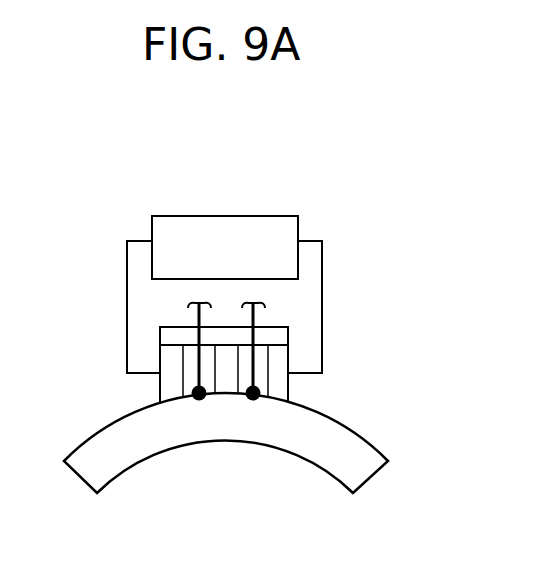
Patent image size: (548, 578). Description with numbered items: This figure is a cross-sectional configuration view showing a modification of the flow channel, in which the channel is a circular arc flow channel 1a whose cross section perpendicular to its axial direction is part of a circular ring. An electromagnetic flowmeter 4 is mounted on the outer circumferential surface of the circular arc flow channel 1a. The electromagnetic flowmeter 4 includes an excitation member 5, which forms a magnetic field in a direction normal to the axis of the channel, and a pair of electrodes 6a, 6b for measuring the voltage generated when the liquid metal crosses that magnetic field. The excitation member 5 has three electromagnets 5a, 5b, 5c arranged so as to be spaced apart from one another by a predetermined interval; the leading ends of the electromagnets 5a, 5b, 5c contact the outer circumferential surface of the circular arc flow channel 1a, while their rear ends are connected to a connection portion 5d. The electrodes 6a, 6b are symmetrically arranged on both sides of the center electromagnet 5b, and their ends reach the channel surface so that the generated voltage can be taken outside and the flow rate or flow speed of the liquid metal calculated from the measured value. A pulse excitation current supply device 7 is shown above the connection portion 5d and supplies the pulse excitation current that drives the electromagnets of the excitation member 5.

The circular arc flow channel 1a is at (337, 462).
The electromagnetic flowmeter 4 is at (248, 190).
The excitation member 5 is at (444, 331).
The electromagnet 5a is at (285, 391).
The electromagnet 5b is at (230, 368).
The electromagnet 5c is at (165, 392).
The connection portion 5d is at (158, 338).
The electrode 6a is at (196, 314).
The electrode 6b is at (256, 313).
The pulse excitation current supply device 7 is at (186, 226).